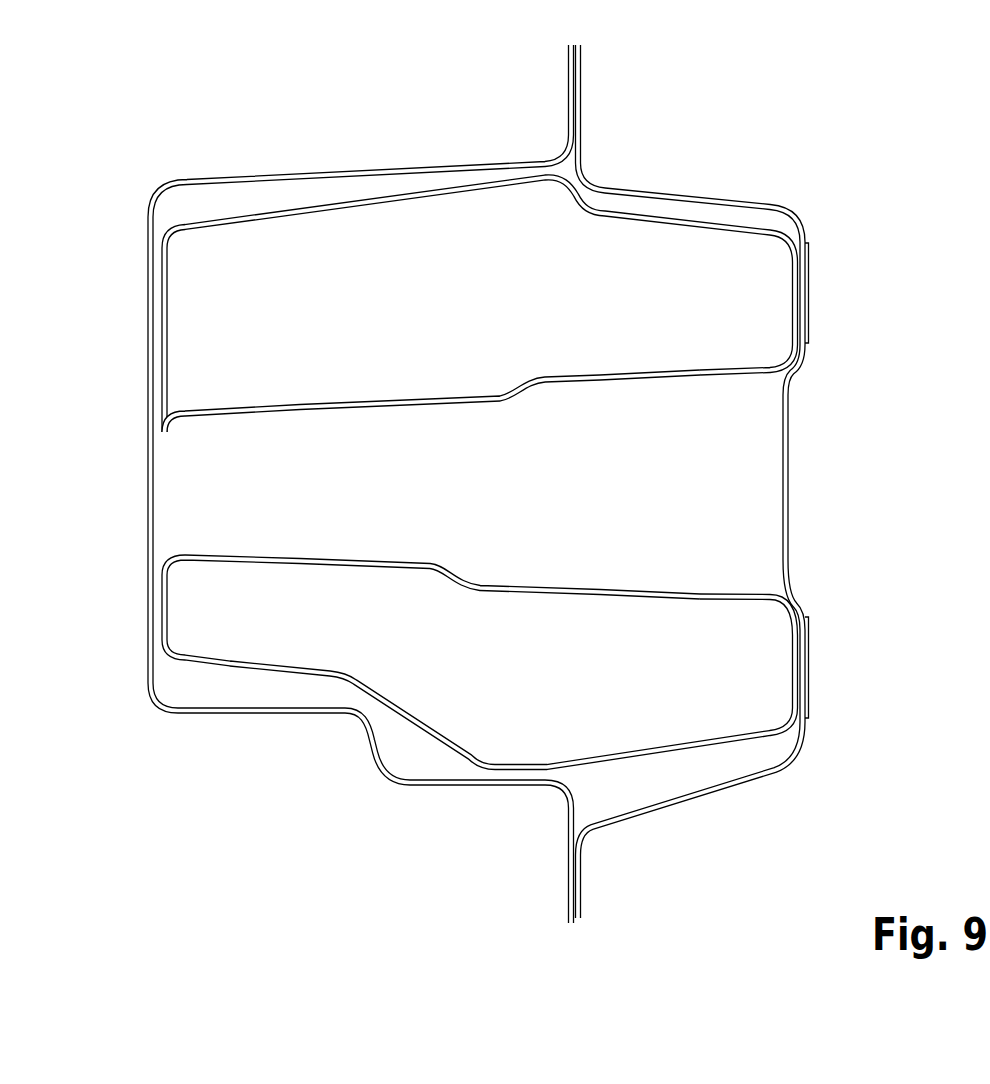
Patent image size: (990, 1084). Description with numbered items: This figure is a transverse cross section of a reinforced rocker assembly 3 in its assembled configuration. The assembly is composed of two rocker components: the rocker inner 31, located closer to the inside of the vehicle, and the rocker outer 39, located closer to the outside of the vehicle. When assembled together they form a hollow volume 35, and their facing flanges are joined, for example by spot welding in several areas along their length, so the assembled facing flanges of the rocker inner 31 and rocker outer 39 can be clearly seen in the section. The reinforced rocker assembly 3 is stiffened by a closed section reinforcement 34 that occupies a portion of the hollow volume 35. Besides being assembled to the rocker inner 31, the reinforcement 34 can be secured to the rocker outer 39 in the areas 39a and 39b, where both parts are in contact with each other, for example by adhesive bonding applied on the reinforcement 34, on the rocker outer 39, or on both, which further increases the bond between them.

The reinforced rocker assembly 3 is at (497, 481).
The rocker inner 31 is at (216, 169).
The closed section reinforcement 34 is at (307, 416).
The hollow volume 35 is at (540, 448).
The rocker outer 39 is at (790, 473).
The area 39a is at (804, 292).
The area 39b is at (804, 662).